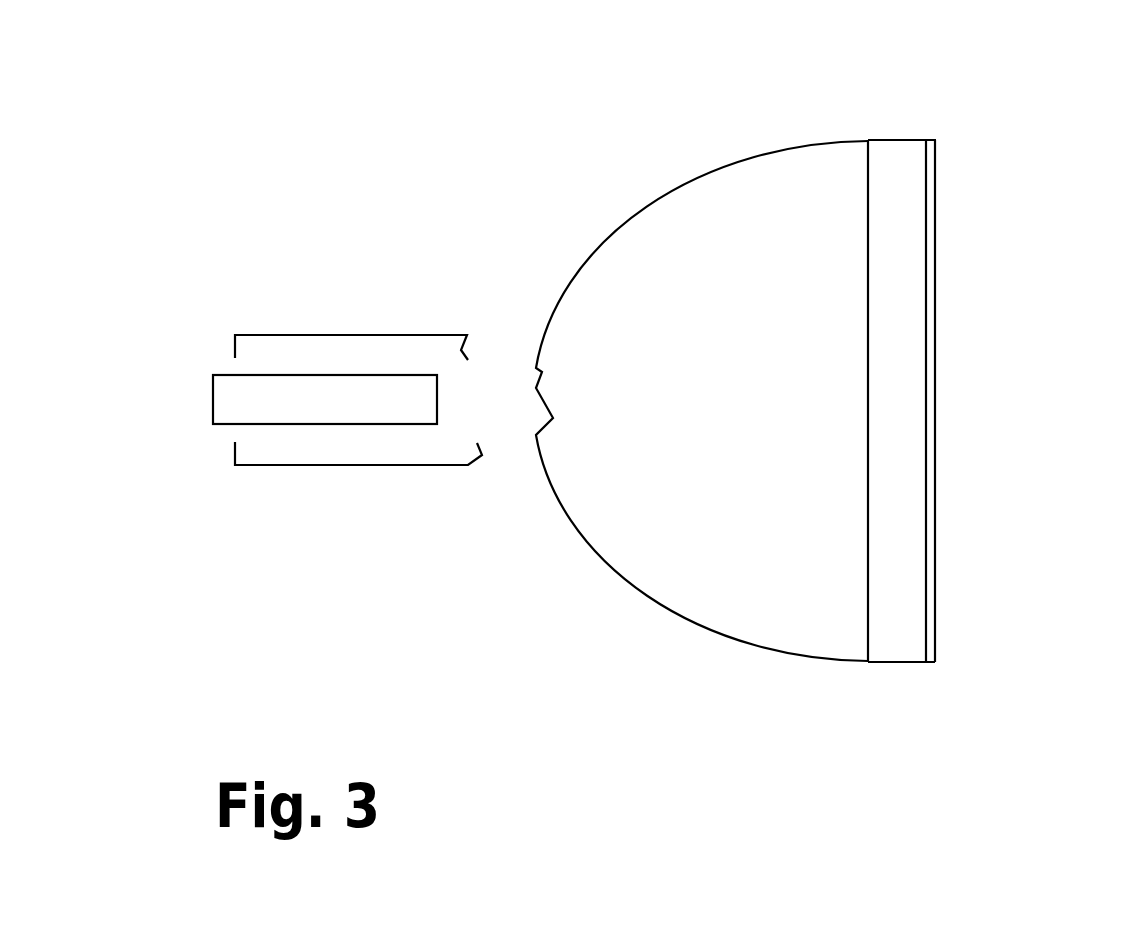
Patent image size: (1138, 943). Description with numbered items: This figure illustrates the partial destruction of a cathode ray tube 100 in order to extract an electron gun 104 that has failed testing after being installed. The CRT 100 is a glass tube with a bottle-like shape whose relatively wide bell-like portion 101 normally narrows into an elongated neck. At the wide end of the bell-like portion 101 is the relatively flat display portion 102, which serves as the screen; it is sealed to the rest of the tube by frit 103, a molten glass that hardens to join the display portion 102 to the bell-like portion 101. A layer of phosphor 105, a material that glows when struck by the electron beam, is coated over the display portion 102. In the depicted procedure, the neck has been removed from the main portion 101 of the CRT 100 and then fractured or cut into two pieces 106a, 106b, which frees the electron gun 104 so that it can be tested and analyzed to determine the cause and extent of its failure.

The cathode ray tube 100 is at (493, 263).
The bell-like portion 101 is at (812, 197).
The flat or display portion 102 is at (936, 327).
The frit 103 is at (868, 662).
The electron gun 104 is at (323, 402).
The phosphor layer 105 is at (933, 617).
The neck piece 106a is at (347, 335).
The neck piece 106b is at (427, 468).